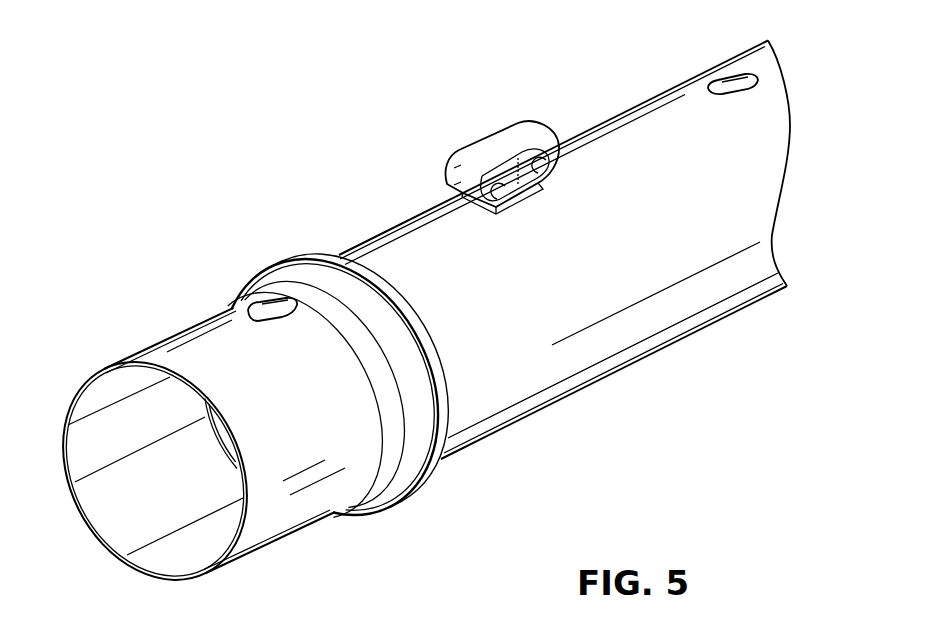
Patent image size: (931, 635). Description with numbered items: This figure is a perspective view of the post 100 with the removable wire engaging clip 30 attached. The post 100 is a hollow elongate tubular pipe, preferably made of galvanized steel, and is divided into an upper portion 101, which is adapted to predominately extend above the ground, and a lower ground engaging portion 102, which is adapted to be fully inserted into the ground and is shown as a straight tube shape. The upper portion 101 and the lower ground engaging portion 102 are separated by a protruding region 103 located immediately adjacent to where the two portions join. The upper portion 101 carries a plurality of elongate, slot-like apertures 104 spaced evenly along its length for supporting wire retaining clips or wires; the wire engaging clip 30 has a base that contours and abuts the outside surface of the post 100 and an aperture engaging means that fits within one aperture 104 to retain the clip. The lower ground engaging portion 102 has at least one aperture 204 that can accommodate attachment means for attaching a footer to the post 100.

The post 100 is at (226, 127).
The upper portion 101 is at (603, 332).
The lower ground engaging portion 102 is at (288, 497).
The protruding region 103 is at (269, 254).
The apertures 104 is at (728, 81).
The aperture 204 is at (262, 312).
The wire engaging clip 30 is at (469, 138).